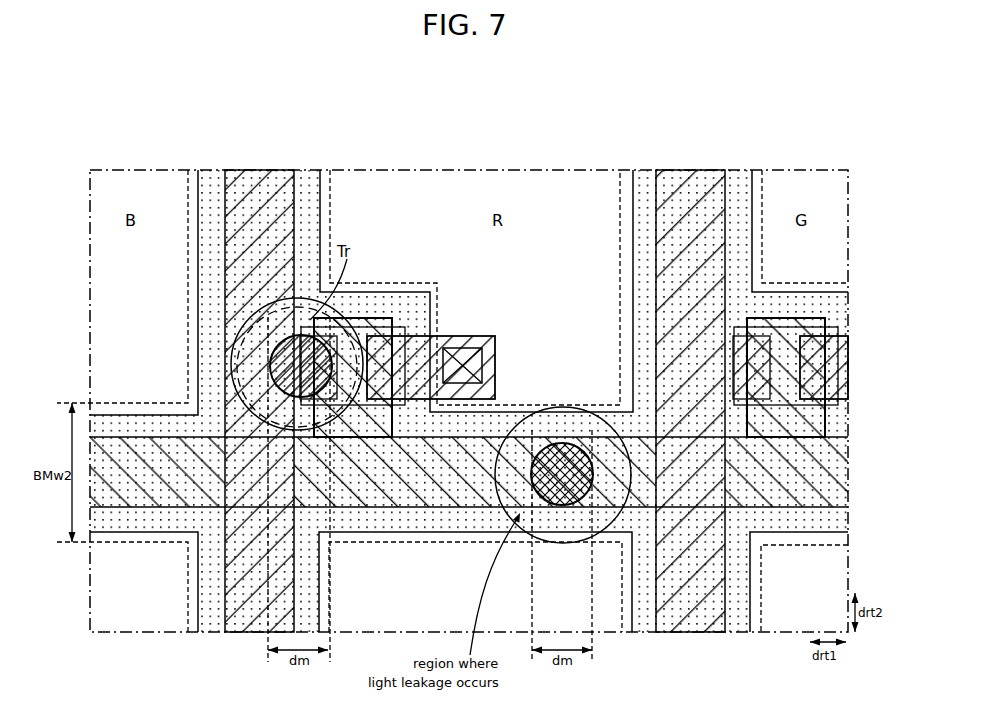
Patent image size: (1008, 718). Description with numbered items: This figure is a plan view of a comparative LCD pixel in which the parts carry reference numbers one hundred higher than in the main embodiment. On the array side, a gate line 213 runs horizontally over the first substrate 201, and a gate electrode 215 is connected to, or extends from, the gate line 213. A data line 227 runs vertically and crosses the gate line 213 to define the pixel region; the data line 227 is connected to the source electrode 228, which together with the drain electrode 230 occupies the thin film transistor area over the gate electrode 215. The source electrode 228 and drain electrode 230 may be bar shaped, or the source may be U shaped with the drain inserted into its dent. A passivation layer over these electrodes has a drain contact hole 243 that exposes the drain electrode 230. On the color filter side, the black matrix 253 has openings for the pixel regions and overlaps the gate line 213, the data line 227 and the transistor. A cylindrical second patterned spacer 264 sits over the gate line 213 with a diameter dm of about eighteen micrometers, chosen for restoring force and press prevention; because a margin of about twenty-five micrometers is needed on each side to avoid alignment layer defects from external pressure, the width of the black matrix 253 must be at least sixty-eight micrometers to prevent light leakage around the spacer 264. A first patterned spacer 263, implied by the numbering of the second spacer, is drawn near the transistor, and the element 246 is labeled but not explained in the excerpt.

The first substrate 201 is at (817, 124).
The black matrix 246 is at (312, 229).
The data line 227 is at (257, 278).
The black matrix 253 is at (180, 332).
The main column spacer 263 is at (283, 352).
The gate electrode 215 is at (370, 318).
The drain electrode 230 is at (418, 352).
The drain contact hole 243 is at (491, 358).
The second patterned spacer 264 is at (566, 445).
The source electrode 228 is at (350, 388).
The gate line 213 is at (401, 487).